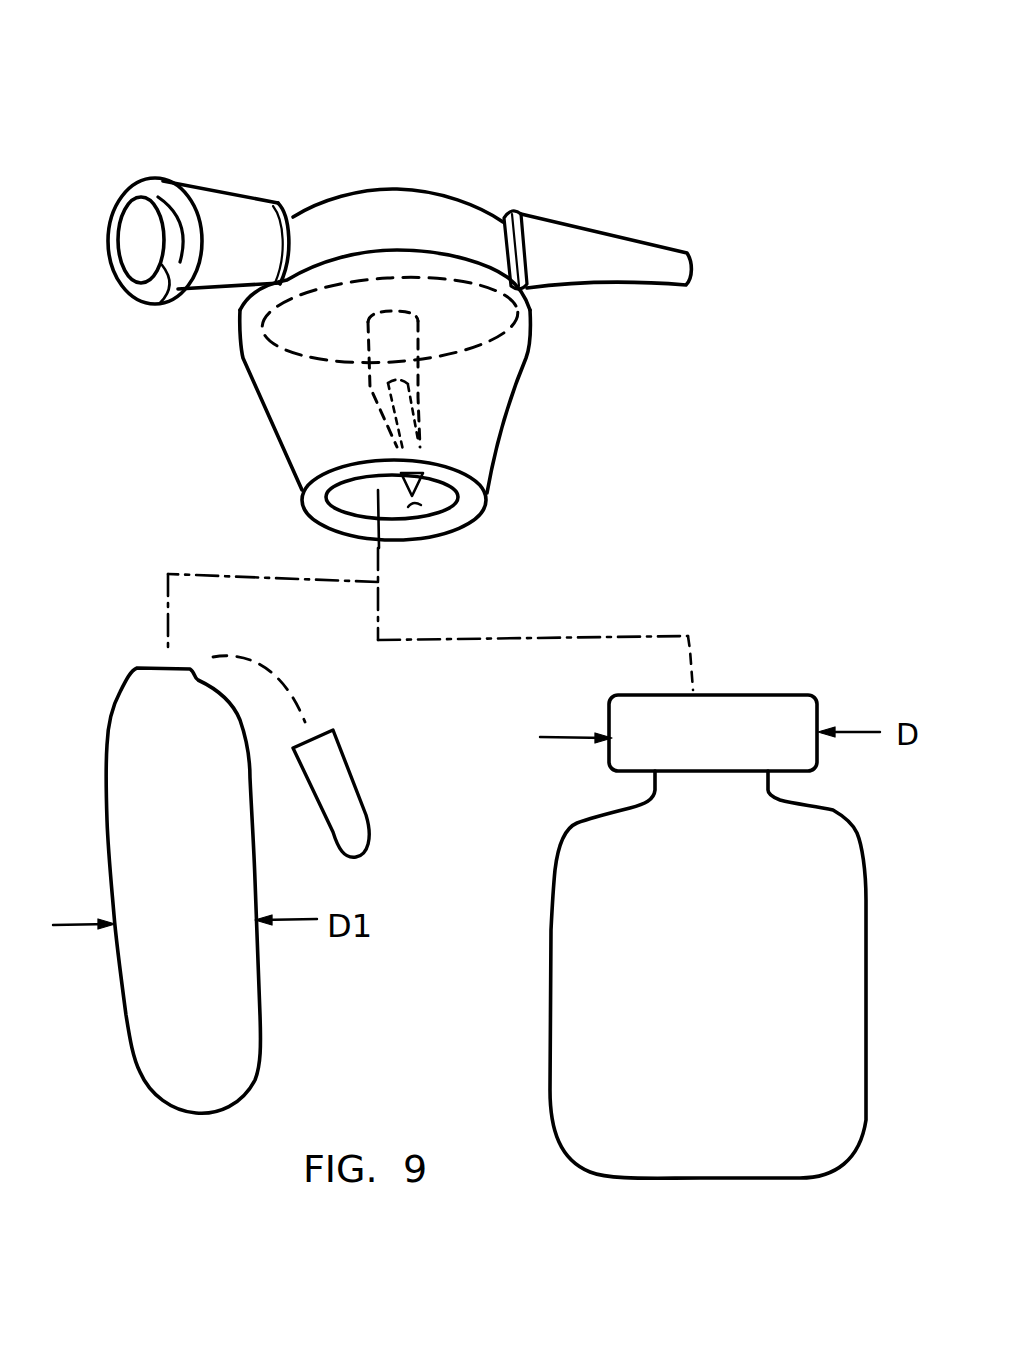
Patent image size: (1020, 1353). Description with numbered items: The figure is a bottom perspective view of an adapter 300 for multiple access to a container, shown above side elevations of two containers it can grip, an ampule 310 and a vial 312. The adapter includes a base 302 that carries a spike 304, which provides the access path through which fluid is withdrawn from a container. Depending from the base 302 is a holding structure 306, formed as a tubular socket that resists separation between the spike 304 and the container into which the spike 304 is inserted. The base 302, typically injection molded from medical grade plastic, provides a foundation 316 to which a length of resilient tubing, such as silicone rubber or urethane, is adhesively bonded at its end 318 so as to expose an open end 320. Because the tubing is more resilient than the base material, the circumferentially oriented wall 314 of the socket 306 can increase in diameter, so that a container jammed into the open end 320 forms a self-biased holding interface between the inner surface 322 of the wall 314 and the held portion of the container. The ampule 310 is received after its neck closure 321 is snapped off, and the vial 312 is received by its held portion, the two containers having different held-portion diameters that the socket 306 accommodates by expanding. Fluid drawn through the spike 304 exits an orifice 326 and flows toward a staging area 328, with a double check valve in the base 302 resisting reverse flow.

The adapter 300 is at (522, 106).
The base 302 is at (365, 212).
The spike 304 is at (418, 371).
The holding structure 306 is at (290, 415).
The ampule 310 is at (246, 1038).
The vial 312 is at (563, 1043).
The circumferentially oriented wall 314 is at (475, 514).
The foundation 316 is at (415, 278).
The end 318 is at (242, 315).
The open end 320 is at (300, 493).
The neck closure 321 is at (347, 788).
The inner surface 322 is at (418, 505).
The orifice 326 is at (410, 418).
The staging area 328 is at (138, 240).